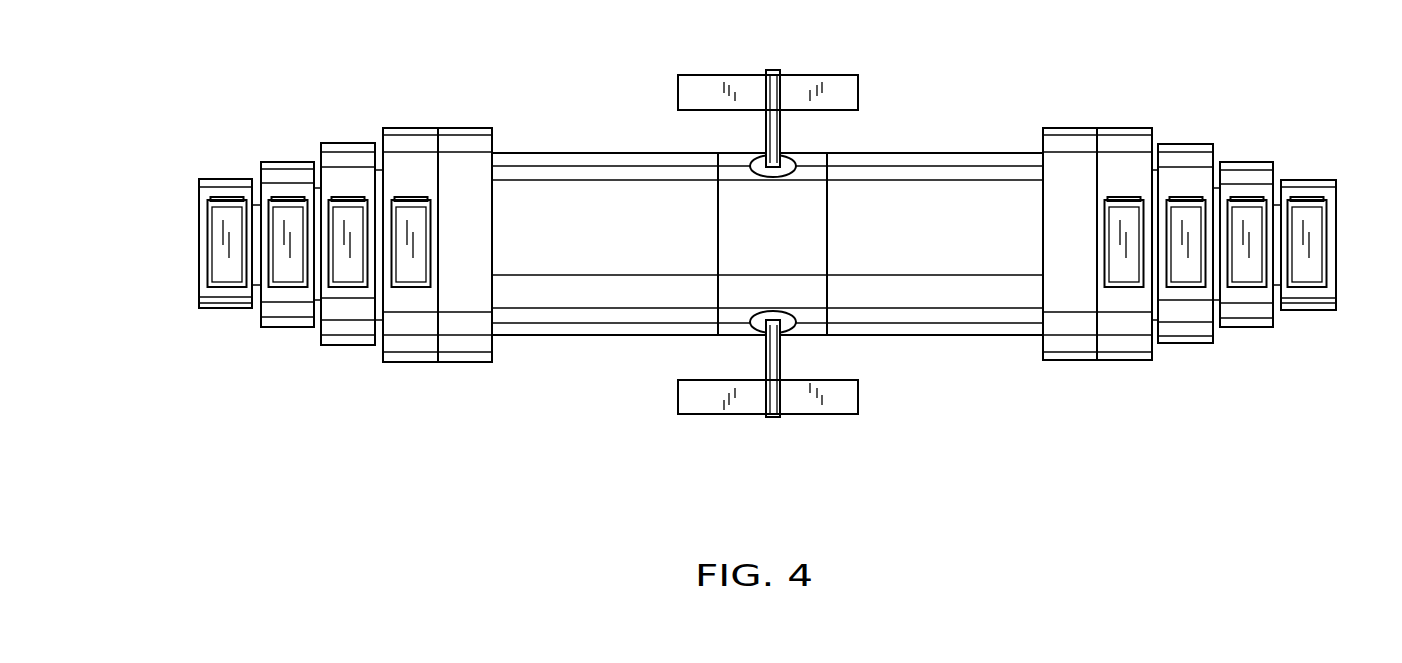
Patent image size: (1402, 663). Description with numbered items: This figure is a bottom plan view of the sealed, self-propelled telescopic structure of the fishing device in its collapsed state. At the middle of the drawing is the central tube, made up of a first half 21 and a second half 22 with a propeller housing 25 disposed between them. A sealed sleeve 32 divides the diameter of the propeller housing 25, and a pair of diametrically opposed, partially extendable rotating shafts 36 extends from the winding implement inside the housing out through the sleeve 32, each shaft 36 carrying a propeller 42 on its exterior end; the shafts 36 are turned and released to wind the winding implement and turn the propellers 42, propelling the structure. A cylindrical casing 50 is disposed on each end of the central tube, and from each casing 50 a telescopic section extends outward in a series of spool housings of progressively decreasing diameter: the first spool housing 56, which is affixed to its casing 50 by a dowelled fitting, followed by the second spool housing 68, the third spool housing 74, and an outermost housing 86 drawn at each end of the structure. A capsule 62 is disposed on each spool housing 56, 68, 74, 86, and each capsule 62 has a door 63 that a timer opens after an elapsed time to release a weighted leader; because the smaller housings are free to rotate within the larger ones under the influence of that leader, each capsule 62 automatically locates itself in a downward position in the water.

The first half 21 is at (590, 153).
The second half 22 is at (957, 153).
The propeller housing 25 is at (810, 193).
The sealed sleeve 32 is at (757, 162).
The rotating shaft 36 is at (775, 75).
The propeller 42 is at (836, 87).
The cylindrical casing 50 is at (458, 137).
The first spool housing 56 is at (405, 133).
The capsule 62 is at (224, 288).
The door 63 is at (222, 240).
The second spool housing 68 is at (345, 152).
The third spool housing 74 is at (289, 170).
The outer display block 86 is at (217, 186).